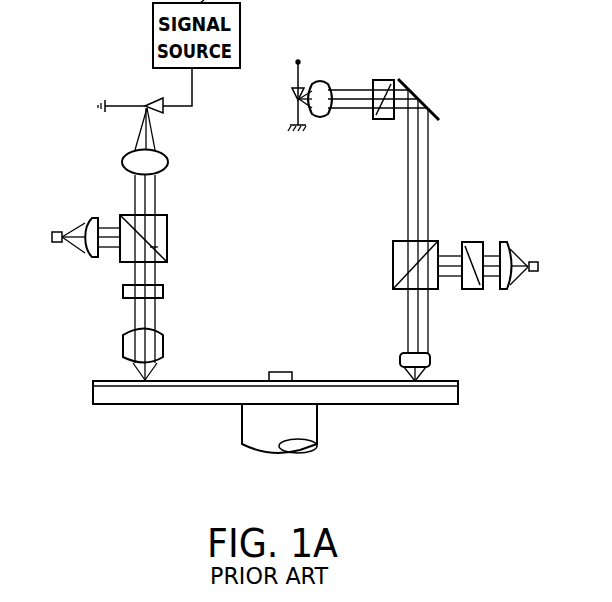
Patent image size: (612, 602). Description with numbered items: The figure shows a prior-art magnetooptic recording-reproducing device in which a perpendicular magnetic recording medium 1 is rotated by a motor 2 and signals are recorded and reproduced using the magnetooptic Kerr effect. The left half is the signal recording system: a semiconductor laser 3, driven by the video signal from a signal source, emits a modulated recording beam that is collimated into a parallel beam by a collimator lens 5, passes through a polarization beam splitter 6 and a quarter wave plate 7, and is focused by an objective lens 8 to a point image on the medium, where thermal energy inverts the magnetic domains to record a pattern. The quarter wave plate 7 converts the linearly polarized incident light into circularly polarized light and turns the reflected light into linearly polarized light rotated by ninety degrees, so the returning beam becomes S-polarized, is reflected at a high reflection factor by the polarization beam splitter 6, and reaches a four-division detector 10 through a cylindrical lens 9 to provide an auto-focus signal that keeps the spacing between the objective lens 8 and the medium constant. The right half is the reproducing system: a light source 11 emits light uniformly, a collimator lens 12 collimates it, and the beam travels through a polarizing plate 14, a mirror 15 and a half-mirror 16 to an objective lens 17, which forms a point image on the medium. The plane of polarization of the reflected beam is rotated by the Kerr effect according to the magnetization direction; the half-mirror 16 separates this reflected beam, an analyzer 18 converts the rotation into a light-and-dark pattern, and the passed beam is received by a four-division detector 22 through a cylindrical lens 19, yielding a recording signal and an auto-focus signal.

The perpendicular magnetic recording medium 1 is at (93, 396).
The motor 2 is at (242, 433).
The semiconductor laser 3 is at (151, 101).
The collimator lens 5 is at (168, 162).
The polarization beam splitter 6 is at (167, 240).
The quarter wave plate 7 is at (163, 292).
The objective lens 8 is at (163, 347).
The cylindrical lens 9 is at (90, 216).
The four-division detector 10 is at (56, 230).
The light source 11 is at (296, 82).
The collimator lens 12 is at (318, 80).
The polarizing plate 14 is at (385, 80).
The mirror 15 is at (441, 112).
The half-mirror 16 is at (434, 241).
The objective lens 17 is at (430, 358).
The analyzer 18 is at (478, 242).
The cylindrical lens 19 is at (512, 243).
The four-division detector 22 is at (539, 266).